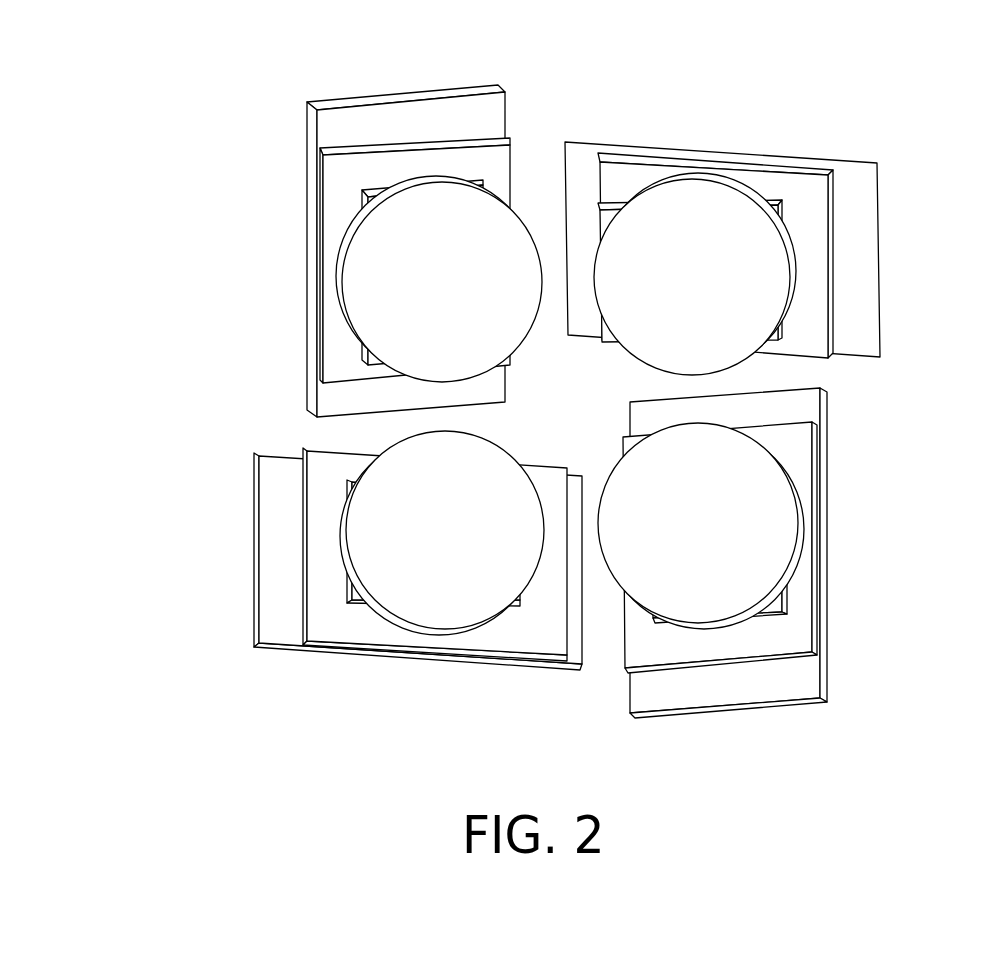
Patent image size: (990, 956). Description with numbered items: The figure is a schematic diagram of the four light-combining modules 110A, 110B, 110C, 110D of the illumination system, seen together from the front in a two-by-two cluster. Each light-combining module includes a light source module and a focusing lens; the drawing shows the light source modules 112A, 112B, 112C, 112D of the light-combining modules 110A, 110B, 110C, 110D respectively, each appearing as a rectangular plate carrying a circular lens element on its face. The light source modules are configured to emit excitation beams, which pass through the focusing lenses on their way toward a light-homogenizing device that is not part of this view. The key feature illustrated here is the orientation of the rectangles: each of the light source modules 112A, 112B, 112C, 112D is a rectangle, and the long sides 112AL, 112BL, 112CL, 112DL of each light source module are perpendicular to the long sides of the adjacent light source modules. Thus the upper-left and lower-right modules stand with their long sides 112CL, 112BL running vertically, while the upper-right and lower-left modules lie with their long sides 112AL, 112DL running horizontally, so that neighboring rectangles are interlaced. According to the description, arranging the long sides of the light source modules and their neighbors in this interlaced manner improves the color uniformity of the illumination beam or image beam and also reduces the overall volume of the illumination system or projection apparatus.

The light-combining module 110A is at (760, 225).
The light-combining module 110B is at (771, 580).
The light-combining module 110C is at (369, 229).
The light-combining module 110D is at (349, 584).
The light source module 112A is at (857, 272).
The light source module 112B is at (802, 683).
The light source module 112C is at (387, 120).
The light source module 112D is at (282, 623).
The long side 112AL is at (720, 152).
The long side 112BL is at (827, 545).
The long side 112CL is at (308, 203).
The long side 112DL is at (393, 658).